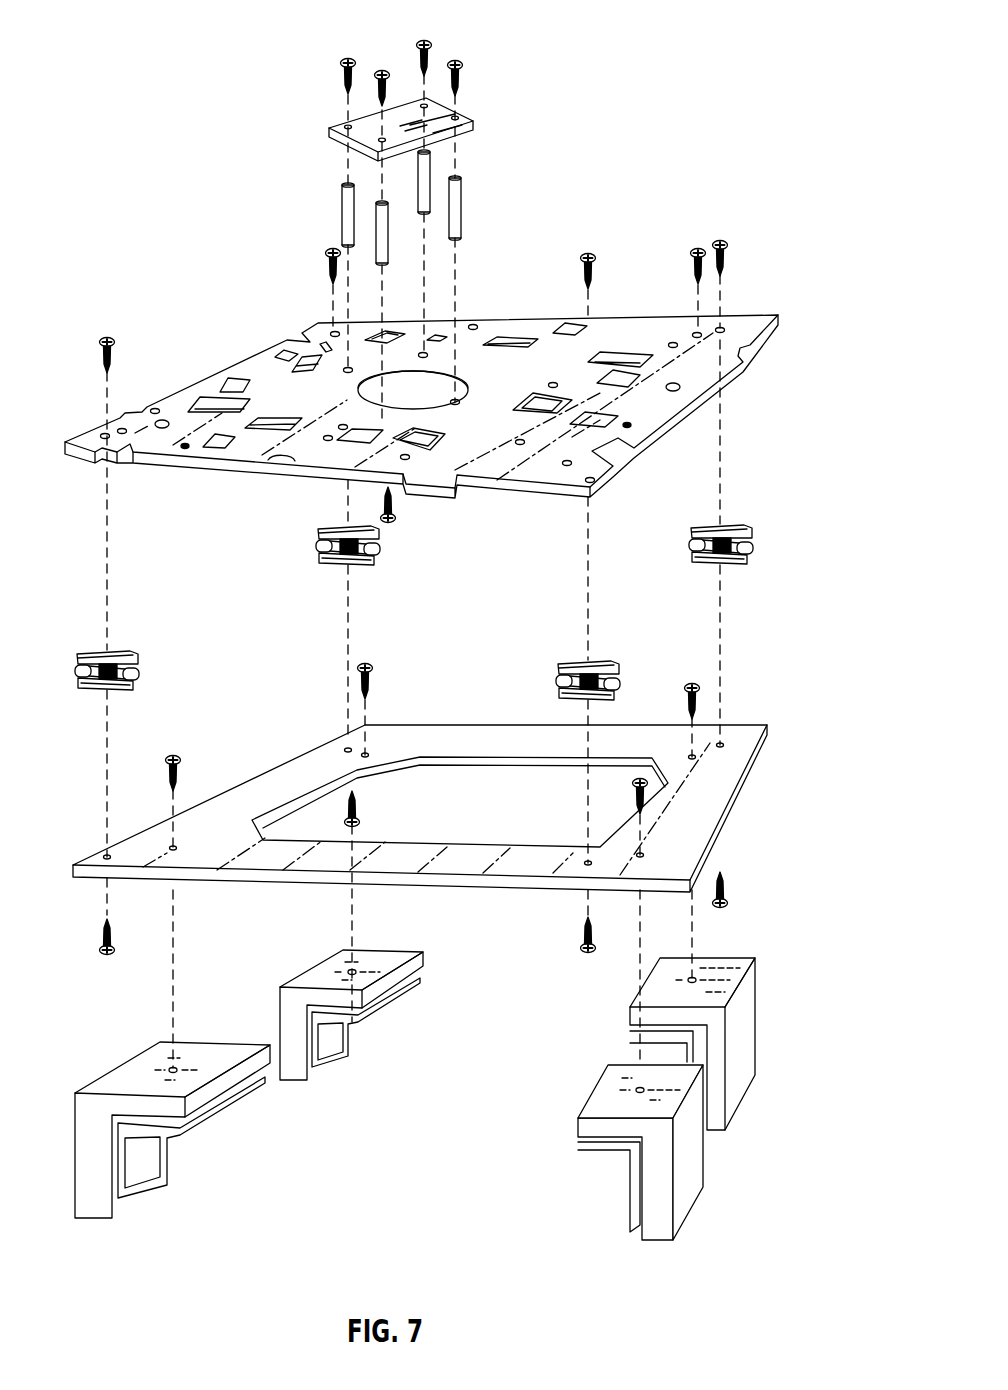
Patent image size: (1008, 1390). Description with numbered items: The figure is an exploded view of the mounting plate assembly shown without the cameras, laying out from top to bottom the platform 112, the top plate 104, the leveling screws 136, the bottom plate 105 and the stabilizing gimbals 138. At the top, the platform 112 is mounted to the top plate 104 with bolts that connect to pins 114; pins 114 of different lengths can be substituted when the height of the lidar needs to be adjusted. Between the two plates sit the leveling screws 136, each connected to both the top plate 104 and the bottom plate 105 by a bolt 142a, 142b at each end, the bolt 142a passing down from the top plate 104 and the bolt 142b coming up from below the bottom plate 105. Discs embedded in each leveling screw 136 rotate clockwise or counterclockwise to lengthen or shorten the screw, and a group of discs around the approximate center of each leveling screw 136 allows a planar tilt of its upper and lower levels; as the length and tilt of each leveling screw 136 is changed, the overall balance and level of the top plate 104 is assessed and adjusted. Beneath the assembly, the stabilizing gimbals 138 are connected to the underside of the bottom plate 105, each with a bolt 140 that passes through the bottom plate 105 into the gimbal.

The top plate 104 is at (498, 362).
The bottom plate 105 is at (740, 742).
The platform 112 is at (407, 123).
The pins 114 is at (458, 205).
The leveling screws 136 is at (745, 548).
The stabilizing gimbals 138 is at (682, 1180).
The bolt 140 is at (645, 797).
The bolt 142a is at (596, 272).
The bolt 142b is at (595, 933).